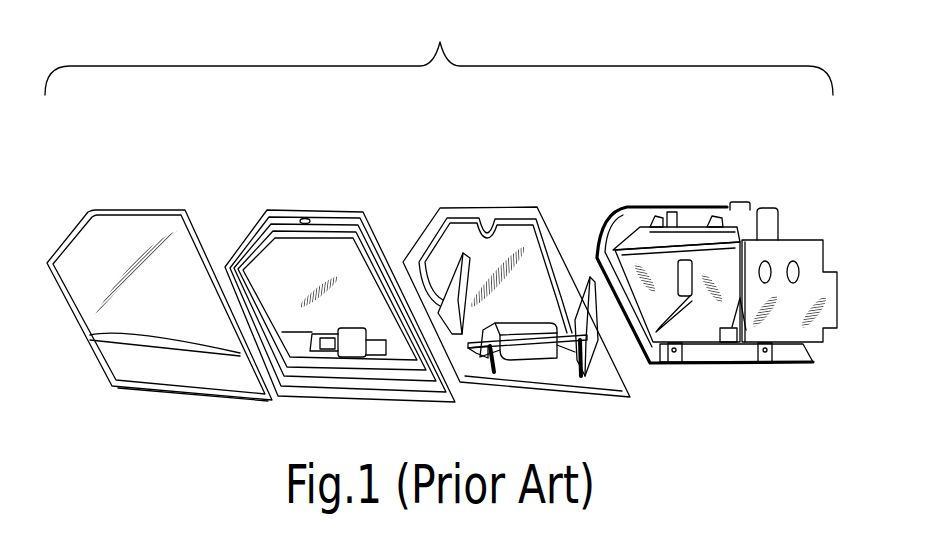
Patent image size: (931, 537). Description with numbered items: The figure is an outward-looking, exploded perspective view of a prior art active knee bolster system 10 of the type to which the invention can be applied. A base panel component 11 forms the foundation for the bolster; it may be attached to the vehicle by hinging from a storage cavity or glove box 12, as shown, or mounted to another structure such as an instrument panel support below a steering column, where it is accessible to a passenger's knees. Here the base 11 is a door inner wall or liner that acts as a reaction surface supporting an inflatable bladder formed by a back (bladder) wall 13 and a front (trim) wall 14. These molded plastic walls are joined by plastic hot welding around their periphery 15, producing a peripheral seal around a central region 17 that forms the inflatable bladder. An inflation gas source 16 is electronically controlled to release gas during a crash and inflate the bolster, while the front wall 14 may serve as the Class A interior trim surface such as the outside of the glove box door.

The active knee bolster system 10 is at (439, 54).
The base panel component 11 is at (469, 205).
The glove box 12 is at (667, 210).
The back (bladder) wall 13 is at (277, 206).
The front (trim) wall 14 is at (141, 205).
The periphery 15 is at (340, 212).
The inflation gas source 16 is at (350, 348).
The central region 17 is at (333, 263).